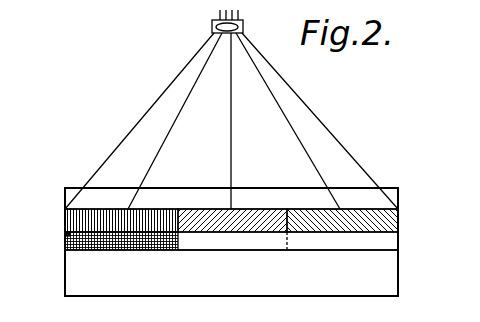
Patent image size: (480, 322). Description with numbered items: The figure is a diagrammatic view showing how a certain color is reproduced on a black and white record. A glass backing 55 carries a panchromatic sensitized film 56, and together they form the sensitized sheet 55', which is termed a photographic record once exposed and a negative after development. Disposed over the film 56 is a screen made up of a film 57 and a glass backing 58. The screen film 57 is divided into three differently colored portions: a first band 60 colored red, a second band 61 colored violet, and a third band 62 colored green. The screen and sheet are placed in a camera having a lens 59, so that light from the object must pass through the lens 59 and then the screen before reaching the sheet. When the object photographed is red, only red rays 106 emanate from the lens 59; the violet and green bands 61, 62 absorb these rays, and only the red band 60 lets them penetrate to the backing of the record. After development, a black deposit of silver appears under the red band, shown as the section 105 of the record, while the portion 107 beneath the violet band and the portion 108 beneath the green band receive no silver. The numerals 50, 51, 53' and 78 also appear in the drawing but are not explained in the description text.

The element 50 is at (10, 124).
The element 51 is at (10, 86).
The edge portion 53' is at (48, 185).
The glass backing 55 is at (247, 242).
The sensitized sheet 55' is at (42, 275).
The sensitized film 56 is at (398, 247).
The screen film 57 is at (398, 214).
The glass backing of screen 58 is at (383, 188).
The lens 59 is at (243, 17).
The first band 60 is at (133, 212).
The second band 61 is at (210, 212).
The third band 62 is at (307, 213).
The cross-hatched region 78 is at (66, 244).
The section of record 105 is at (66, 233).
The red rays 106 is at (180, 104).
The portion of record 107 is at (216, 251).
The portion of record 108 is at (334, 251).